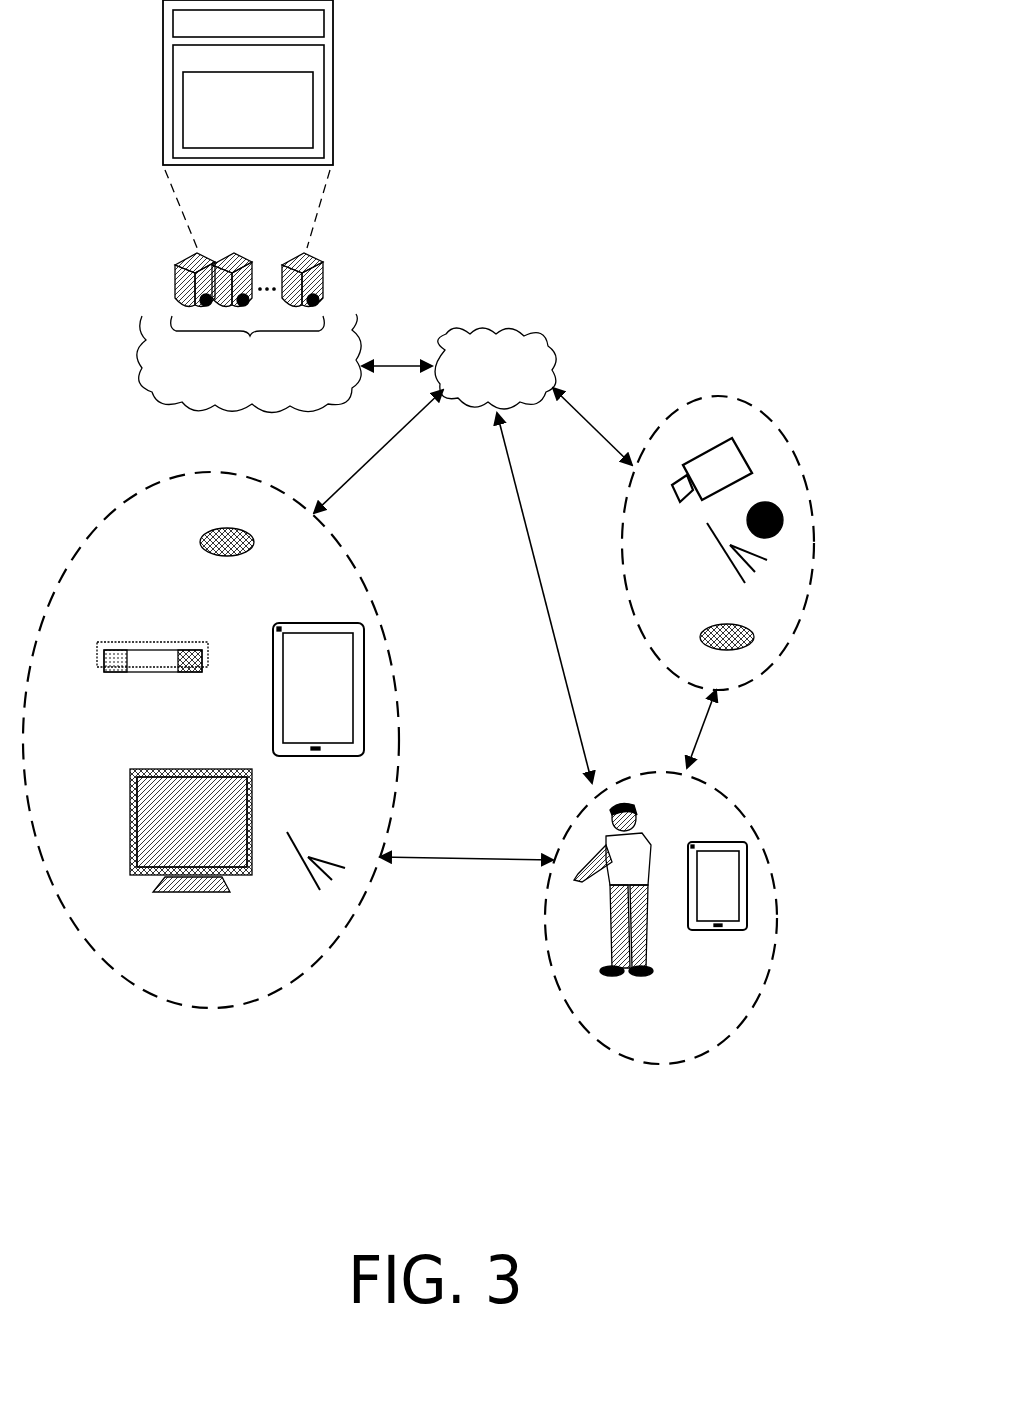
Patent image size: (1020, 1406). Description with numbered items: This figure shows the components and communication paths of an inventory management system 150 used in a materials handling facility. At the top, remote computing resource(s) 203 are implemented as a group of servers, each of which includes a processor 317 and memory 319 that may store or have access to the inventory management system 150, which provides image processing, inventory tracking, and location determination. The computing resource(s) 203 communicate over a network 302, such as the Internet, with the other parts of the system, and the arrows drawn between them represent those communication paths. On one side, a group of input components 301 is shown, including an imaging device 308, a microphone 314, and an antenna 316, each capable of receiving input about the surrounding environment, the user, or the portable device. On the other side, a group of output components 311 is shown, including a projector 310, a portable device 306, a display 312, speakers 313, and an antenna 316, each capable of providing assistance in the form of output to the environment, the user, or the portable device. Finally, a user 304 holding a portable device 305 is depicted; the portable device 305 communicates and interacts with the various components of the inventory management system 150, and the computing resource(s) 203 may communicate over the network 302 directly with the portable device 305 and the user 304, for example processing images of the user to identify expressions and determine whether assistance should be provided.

The processor 317 is at (248, 23).
The memory 319 is at (248, 101).
The inventory management system 150 is at (248, 110).
The computing resource(s) 203 is at (249, 363).
The network 302 is at (495, 368).
The input components 301 is at (140, 987).
The speakers 313 is at (225, 555).
The projector 310 is at (163, 672).
The portable device 306 is at (343, 757).
The display 312 is at (202, 892).
The antenna 316 is at (317, 893).
The output components 311 is at (716, 397).
The imaging device 308 is at (672, 492).
The microphone 314 is at (727, 650).
The user 304 is at (607, 928).
The portable device 305 is at (718, 842).